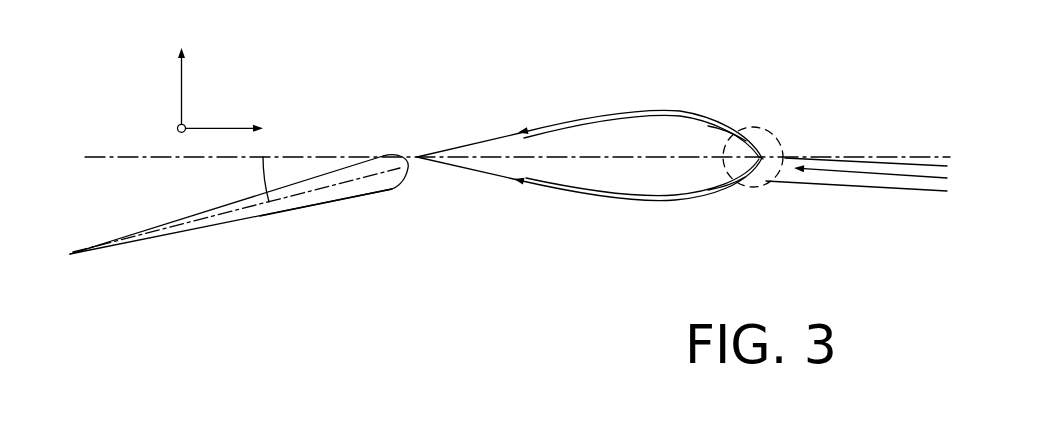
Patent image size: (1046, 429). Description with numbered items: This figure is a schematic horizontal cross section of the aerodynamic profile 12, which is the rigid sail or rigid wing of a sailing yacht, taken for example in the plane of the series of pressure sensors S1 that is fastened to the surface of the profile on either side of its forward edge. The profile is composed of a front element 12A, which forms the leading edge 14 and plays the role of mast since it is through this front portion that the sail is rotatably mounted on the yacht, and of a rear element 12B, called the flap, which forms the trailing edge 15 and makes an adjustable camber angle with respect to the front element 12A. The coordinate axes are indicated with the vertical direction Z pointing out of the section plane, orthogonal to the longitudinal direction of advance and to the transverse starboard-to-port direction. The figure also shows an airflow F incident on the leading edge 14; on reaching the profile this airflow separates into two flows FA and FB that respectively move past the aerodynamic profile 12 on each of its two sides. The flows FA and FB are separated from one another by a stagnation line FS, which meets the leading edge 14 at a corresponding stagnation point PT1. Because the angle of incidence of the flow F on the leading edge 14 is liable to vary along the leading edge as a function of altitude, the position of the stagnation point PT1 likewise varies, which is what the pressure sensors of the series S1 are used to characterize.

The aerodynamic profile 12 is at (181, 248).
The front element 12A is at (528, 184).
The rear element 12B is at (312, 204).
The leading edge 14 is at (781, 146).
The trailing edge 15 is at (70, 257).
The flow FA is at (647, 112).
The flow FB is at (615, 198).
The stagnation line FS is at (855, 173).
The airflow F is at (907, 212).
The series of sensors S1 is at (727, 124).
The stagnation point PT1 is at (764, 168).
The velocity V is at (763, 128).
The vertical direction Z is at (216, 81).